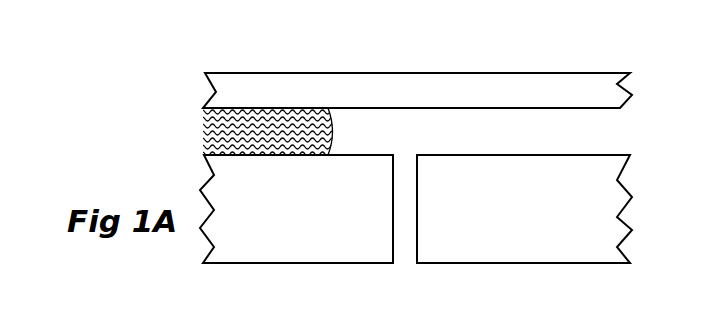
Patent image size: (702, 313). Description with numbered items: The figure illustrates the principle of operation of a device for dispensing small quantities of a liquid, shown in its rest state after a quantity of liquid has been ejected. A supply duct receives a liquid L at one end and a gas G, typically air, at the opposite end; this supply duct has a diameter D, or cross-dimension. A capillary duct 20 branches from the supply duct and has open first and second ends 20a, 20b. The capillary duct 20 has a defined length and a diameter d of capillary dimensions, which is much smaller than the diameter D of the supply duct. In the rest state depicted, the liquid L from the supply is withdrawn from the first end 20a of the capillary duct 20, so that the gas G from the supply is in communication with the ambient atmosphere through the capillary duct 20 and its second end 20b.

The capillary duct 20 is at (417, 217).
The first end 20a is at (418, 150).
The second end 20b is at (393, 263).
The liquid L is at (257, 143).
The diameter of supply duct D is at (563, 155).
The gas G is at (600, 132).
The diameter of capillary duct d is at (452, 297).